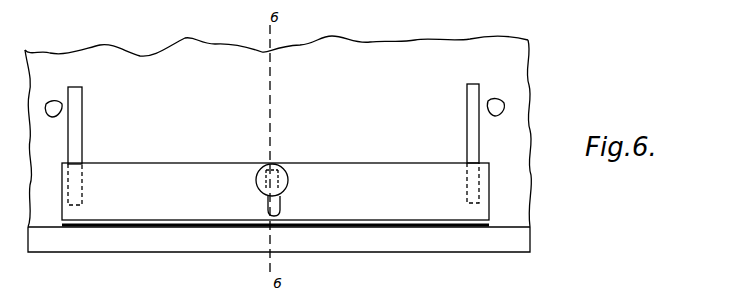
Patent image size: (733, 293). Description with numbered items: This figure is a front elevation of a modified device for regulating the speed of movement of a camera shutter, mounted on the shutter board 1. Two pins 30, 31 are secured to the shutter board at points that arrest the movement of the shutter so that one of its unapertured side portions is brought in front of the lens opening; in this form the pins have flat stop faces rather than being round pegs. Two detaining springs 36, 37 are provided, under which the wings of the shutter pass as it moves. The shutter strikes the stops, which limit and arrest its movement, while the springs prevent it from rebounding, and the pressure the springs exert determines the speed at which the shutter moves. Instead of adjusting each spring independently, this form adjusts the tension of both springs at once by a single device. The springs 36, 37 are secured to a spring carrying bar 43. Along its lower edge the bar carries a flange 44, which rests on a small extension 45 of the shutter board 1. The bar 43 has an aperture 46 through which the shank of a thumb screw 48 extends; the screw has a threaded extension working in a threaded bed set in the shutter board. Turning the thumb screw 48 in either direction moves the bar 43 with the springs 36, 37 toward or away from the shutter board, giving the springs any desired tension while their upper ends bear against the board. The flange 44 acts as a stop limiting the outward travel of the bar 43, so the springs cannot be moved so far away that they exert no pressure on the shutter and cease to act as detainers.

The shutter board 1 is at (278, 131).
The pin 30 is at (496, 118).
The pin 31 is at (49, 125).
The spring 36 is at (466, 128).
The spring 37 is at (83, 125).
The spring carrying bar 43 is at (275, 191).
The flange 44 is at (444, 214).
The extension 45 is at (279, 239).
The aperture 46 is at (281, 204).
The thumb screw 48 is at (289, 182).